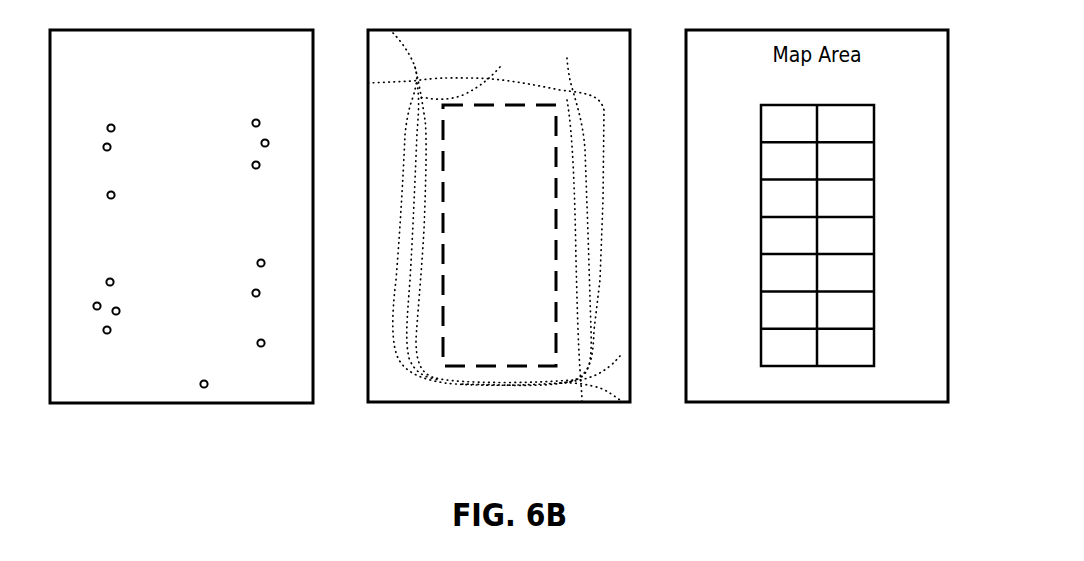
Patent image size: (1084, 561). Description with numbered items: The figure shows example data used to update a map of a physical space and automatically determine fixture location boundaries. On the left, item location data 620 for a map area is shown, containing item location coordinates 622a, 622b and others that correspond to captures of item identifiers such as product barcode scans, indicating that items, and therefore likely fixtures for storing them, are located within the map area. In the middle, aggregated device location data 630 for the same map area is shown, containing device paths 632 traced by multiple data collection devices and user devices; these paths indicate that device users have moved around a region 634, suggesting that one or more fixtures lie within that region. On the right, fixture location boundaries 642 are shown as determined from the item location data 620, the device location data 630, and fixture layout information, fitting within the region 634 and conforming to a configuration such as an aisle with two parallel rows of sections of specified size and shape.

The item location data 620 is at (220, 32).
The item location coordinate 622a is at (206, 388).
The item location coordinate 622b is at (263, 347).
The device location data 630 is at (537, 32).
The device paths 632 is at (479, 385).
The region 634 is at (548, 367).
The fixture location boundaries 642 is at (842, 367).